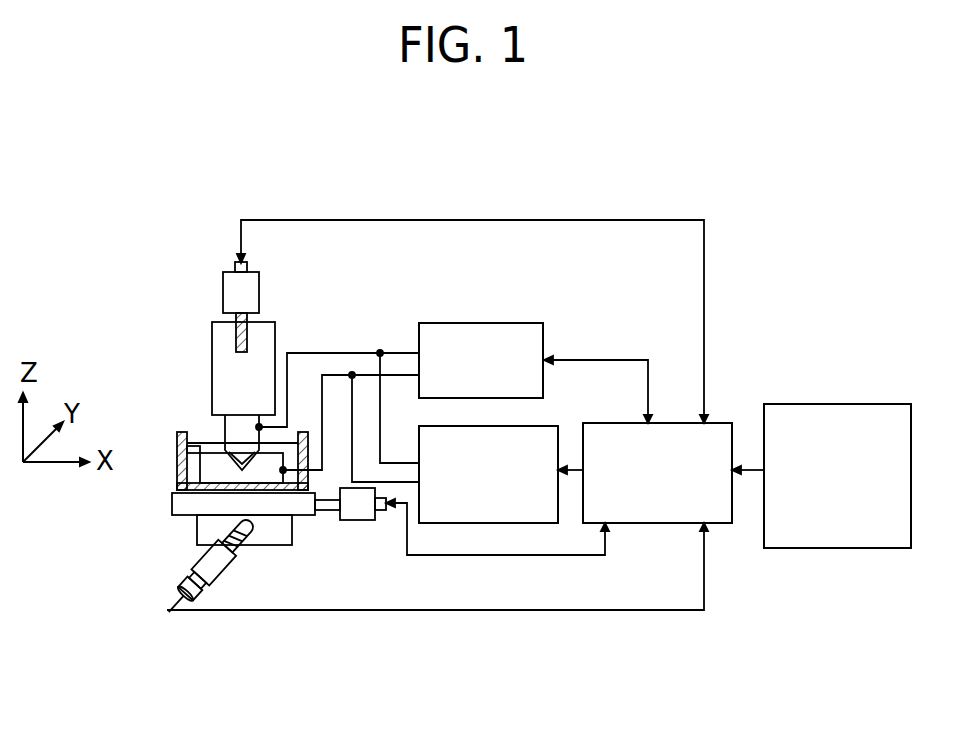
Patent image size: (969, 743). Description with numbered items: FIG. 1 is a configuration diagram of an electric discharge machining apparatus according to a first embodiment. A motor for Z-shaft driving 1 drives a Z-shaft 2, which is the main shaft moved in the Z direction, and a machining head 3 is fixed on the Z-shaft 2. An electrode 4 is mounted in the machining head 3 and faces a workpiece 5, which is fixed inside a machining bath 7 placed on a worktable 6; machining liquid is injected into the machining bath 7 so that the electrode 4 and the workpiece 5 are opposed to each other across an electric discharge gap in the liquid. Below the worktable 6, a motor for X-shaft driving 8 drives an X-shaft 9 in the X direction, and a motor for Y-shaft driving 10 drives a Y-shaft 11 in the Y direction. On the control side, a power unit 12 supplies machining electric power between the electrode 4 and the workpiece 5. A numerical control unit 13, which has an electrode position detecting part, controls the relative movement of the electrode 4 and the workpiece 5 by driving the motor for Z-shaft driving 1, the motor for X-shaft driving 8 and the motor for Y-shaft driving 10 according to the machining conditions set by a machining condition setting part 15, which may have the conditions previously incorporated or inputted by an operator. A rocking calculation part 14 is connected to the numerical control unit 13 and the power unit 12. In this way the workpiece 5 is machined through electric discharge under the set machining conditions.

The motor for Z-shaft driving 1 is at (235, 263).
The Z-shaft 2 is at (238, 335).
The machining head 3 is at (212, 356).
The electrode 4 is at (224, 428).
The workpiece 5 is at (211, 462).
The worktable 6 is at (172, 500).
The machining bath 7 is at (178, 459).
The motor for X-shaft driving 8 is at (358, 522).
The X-shaft 9 is at (327, 512).
The motor for Y-shaft driving 10 is at (195, 562).
The Y-shaft 11 is at (250, 538).
The power unit 12 is at (469, 323).
The numerical control unit 13 is at (668, 423).
The rocking calculation part 14 is at (542, 427).
The machining condition setting part 15 is at (790, 404).